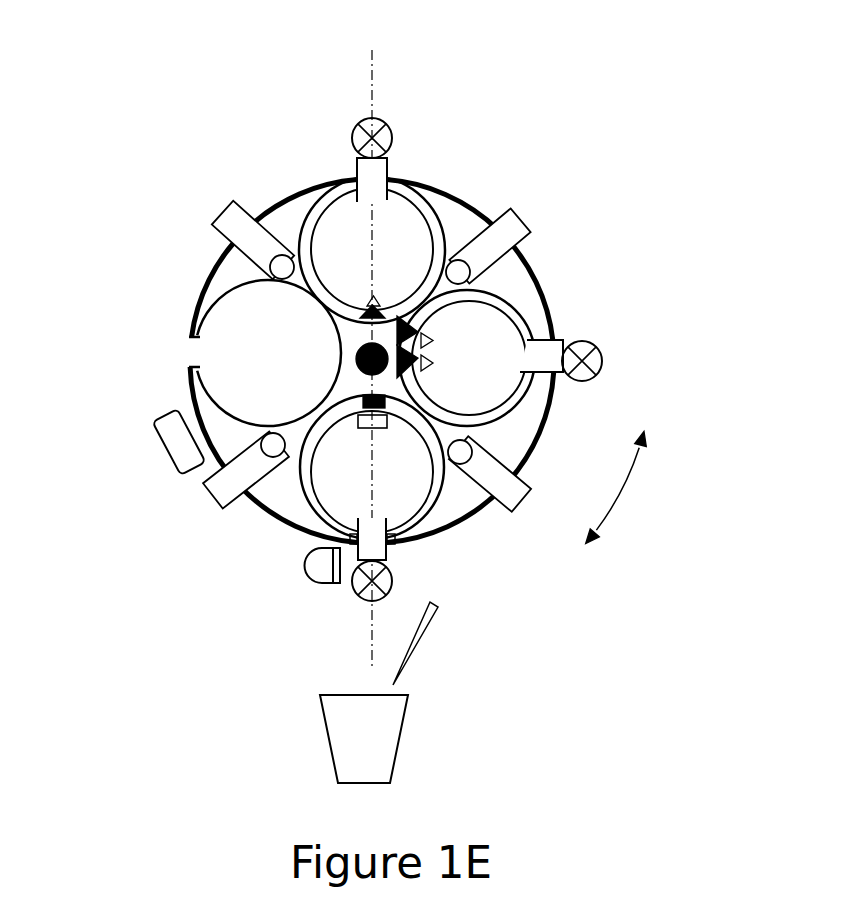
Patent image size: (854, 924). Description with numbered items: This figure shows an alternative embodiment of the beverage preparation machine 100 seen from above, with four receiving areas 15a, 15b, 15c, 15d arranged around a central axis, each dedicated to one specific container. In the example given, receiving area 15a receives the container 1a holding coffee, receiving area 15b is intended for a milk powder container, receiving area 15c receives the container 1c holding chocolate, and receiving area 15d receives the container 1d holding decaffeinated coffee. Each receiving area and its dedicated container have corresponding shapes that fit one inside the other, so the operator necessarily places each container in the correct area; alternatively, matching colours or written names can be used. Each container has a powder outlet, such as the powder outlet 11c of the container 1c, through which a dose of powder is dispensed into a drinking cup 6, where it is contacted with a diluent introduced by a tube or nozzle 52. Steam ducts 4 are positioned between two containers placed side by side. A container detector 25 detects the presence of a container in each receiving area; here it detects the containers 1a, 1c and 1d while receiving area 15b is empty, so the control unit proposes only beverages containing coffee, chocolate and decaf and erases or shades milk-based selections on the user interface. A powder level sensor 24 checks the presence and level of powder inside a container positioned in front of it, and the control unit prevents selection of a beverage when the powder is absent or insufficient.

The beverage preparation machine 100 is at (212, 132).
The receiving area 15c is at (333, 182).
The powder outlet 11c is at (390, 157).
The container 1c is at (410, 235).
The receiving area 15b is at (237, 293).
The receiving area 15d is at (530, 325).
The container 1d is at (507, 390).
The container detector 25 is at (155, 450).
The steam duct 4 is at (205, 493).
The powder level sensor 24 is at (303, 572).
The container 1a is at (420, 488).
The receiving area 15a is at (417, 523).
The tube or nozzle 52 is at (429, 632).
The drinking cup 6 is at (405, 715).